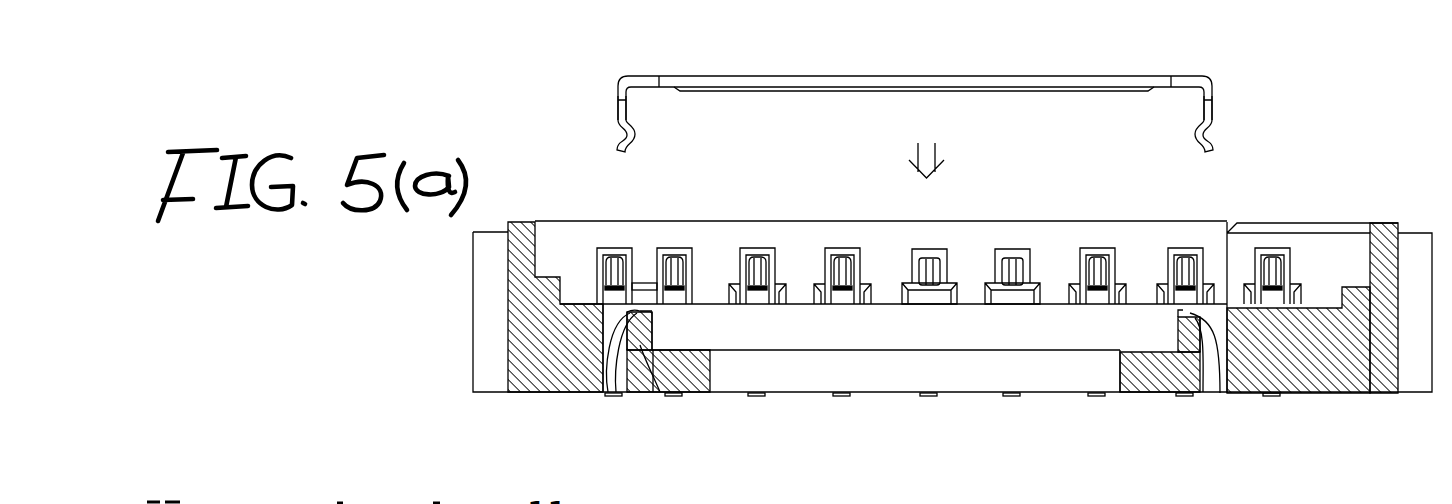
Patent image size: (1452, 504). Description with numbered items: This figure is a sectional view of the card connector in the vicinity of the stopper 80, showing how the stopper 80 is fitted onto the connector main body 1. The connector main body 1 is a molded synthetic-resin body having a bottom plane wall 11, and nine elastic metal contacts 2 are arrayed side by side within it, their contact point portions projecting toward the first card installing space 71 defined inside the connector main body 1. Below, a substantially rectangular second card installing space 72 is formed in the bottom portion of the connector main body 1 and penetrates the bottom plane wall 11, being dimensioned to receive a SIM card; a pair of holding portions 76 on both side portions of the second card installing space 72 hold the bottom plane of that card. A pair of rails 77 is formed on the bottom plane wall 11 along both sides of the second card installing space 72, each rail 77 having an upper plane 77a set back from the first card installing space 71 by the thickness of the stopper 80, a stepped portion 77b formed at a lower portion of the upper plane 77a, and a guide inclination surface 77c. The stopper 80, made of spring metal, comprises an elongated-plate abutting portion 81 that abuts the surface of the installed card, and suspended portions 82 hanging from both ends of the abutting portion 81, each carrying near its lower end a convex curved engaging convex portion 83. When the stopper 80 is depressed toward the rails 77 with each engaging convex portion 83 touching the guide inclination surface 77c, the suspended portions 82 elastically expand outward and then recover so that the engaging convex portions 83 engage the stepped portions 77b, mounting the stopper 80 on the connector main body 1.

The connector main body 1 is at (1400, 258).
The contacts 2 is at (827, 248).
The bottom plane wall 11 is at (577, 300).
The first card installing space 71 is at (1342, 253).
The second card installing space 72 is at (892, 343).
The holding portions 76 is at (710, 370).
The rails 77 is at (650, 335).
The upper plane 77a is at (660, 392).
The stepped portion 77b is at (628, 370).
The guide inclination surface 77c is at (608, 392).
The stopper 80 is at (869, 106).
The abutting portion 81 is at (914, 79).
The suspended portion 82 is at (618, 108).
The engaging convex portion 83 is at (633, 136).